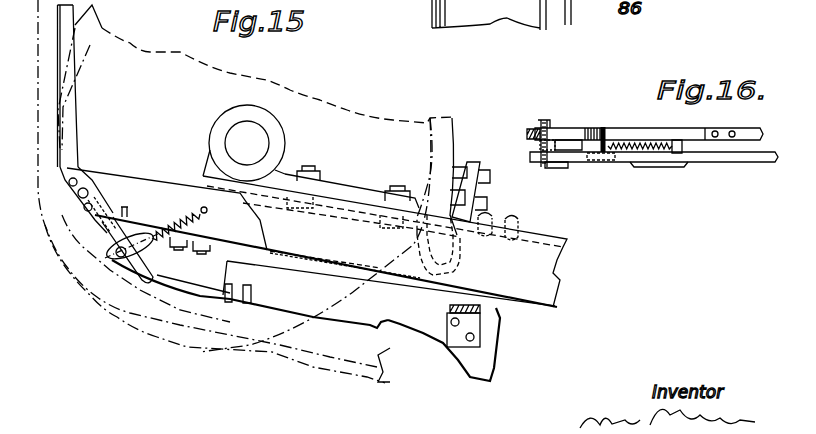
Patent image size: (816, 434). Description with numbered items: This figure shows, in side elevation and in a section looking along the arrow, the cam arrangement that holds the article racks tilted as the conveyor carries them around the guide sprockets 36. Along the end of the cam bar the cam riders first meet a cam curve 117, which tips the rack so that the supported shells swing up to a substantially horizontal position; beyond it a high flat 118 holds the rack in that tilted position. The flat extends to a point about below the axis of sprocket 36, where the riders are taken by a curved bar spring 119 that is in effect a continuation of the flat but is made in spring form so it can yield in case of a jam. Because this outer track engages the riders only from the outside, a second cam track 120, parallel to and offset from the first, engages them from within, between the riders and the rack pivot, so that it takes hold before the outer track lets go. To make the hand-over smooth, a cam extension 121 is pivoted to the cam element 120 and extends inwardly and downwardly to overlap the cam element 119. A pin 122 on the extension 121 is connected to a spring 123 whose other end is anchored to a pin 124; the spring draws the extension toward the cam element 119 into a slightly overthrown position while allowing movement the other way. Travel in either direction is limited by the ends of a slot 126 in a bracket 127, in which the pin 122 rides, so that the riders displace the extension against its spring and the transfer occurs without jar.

In FIG. 15, the guide sprockets 36 is at (452, 118).
In FIG. 15, the cam curve 117 is at (383, 327).
In FIG. 15, the high flat 118 is at (433, 160).
In FIG. 15, the curved bar spring 119 is at (200, 294).
In FIG. 15, the second cam track 120 is at (70, 120).
In FIG. 16, the second cam track 120 is at (531, 129).
In FIG. 15, the cam extension 121 is at (143, 285).
In FIG. 16, the cam extension 121 is at (565, 128).
In FIG. 15, the pin 122 is at (115, 254).
In FIG. 16, the pin 122 is at (604, 141).
In FIG. 15, the spring 123 is at (182, 212).
In FIG. 16, the spring 123 is at (625, 153).
In FIG. 15, the pin 124 is at (205, 236).
In FIG. 16, the pin 124 is at (678, 140).
In FIG. 15, the slot 126 is at (112, 252).
In FIG. 15, the bracket 127 is at (130, 265).
In FIG. 16, the bracket 127 is at (648, 165).